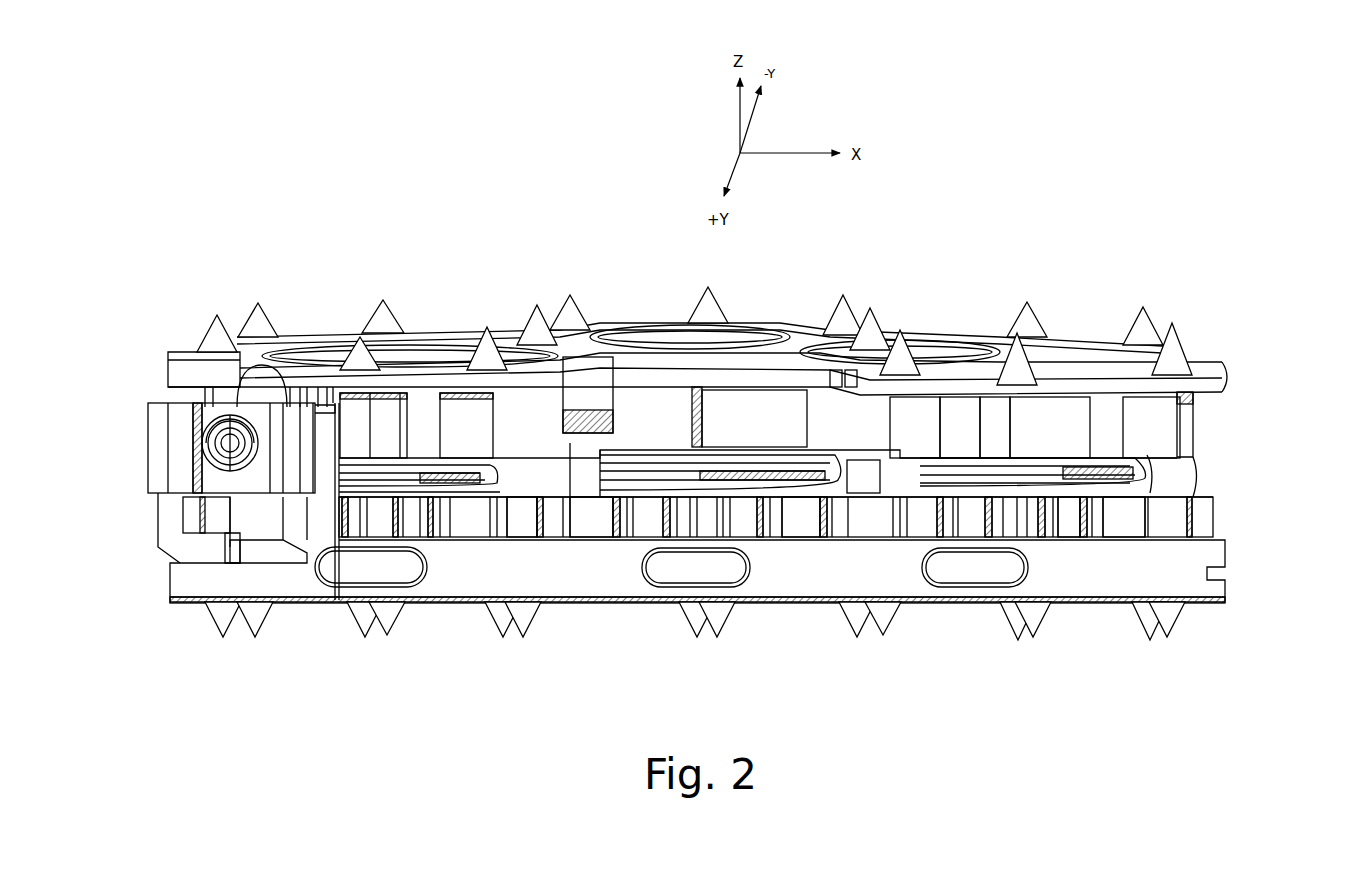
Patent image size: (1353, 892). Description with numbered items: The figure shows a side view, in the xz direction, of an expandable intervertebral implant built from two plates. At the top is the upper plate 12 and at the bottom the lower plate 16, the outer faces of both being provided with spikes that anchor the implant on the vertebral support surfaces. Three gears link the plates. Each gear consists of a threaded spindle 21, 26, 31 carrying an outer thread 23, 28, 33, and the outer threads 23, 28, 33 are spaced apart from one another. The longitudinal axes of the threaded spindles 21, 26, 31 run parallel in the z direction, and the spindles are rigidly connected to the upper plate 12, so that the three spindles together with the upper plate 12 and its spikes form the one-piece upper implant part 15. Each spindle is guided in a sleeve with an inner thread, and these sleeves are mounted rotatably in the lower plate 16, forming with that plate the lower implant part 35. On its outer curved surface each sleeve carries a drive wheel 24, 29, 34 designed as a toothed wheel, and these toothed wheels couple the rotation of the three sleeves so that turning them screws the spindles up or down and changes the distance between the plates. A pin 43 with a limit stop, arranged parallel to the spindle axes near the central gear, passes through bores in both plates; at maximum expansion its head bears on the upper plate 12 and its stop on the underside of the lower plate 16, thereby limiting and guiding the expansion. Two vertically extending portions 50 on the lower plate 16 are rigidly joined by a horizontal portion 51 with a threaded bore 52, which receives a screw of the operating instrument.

The upper plate 12 is at (1222, 420).
The upper implant part 15 is at (1280, 447).
The lower plate 16 is at (1216, 573).
The threaded spindle 21 is at (506, 474).
The outer thread 23 is at (478, 468).
The drive wheel 24 is at (513, 513).
The threaded spindle 26 is at (1144, 476).
The outer thread 28 is at (1080, 490).
The drive wheel 29 is at (1130, 517).
The threaded spindle 31 is at (836, 470).
The outer thread 33 is at (807, 458).
The drive wheel 34 is at (797, 515).
The lower implant part 35 is at (1248, 526).
The pin 43 is at (585, 515).
The vertically extending portion 50 is at (263, 523).
The horizontal portion 51 is at (145, 460).
The threaded bore 52 is at (208, 443).